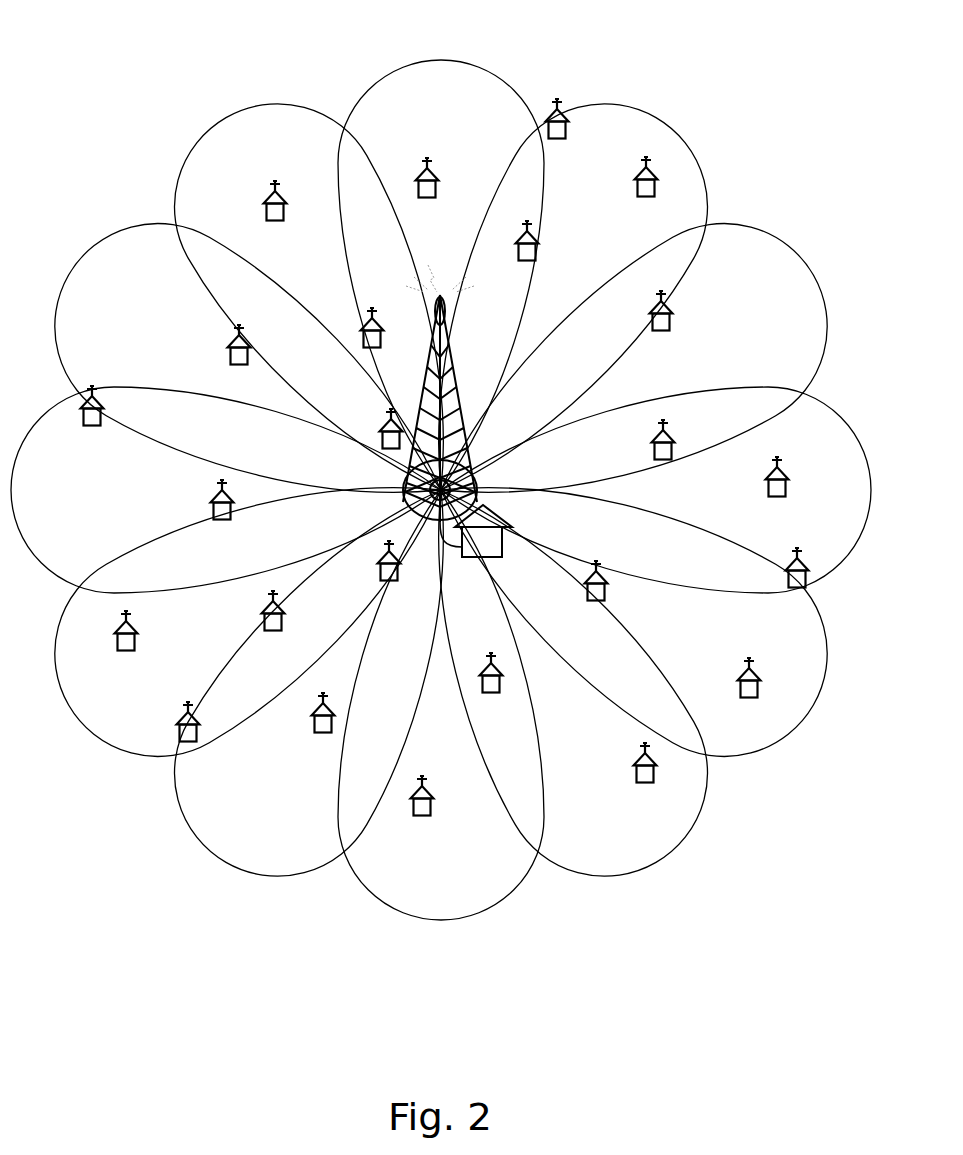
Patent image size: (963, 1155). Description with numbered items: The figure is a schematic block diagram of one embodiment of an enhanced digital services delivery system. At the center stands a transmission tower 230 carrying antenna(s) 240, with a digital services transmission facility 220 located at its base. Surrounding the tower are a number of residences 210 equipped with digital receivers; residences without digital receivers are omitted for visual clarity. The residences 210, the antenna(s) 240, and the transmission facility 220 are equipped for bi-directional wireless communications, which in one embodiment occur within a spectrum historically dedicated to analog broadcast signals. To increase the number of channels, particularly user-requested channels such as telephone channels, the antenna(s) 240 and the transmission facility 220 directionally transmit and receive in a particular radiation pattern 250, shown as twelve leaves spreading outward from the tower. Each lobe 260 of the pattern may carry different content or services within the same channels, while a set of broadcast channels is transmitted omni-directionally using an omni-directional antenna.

The residences 210 is at (414, 807).
The digital services transmission facility 220 is at (502, 537).
The transmission tower 230 is at (465, 393).
The antenna(s) 240 is at (446, 312).
The radiation pattern 250 is at (375, 76).
The lobe 260 is at (870, 490).